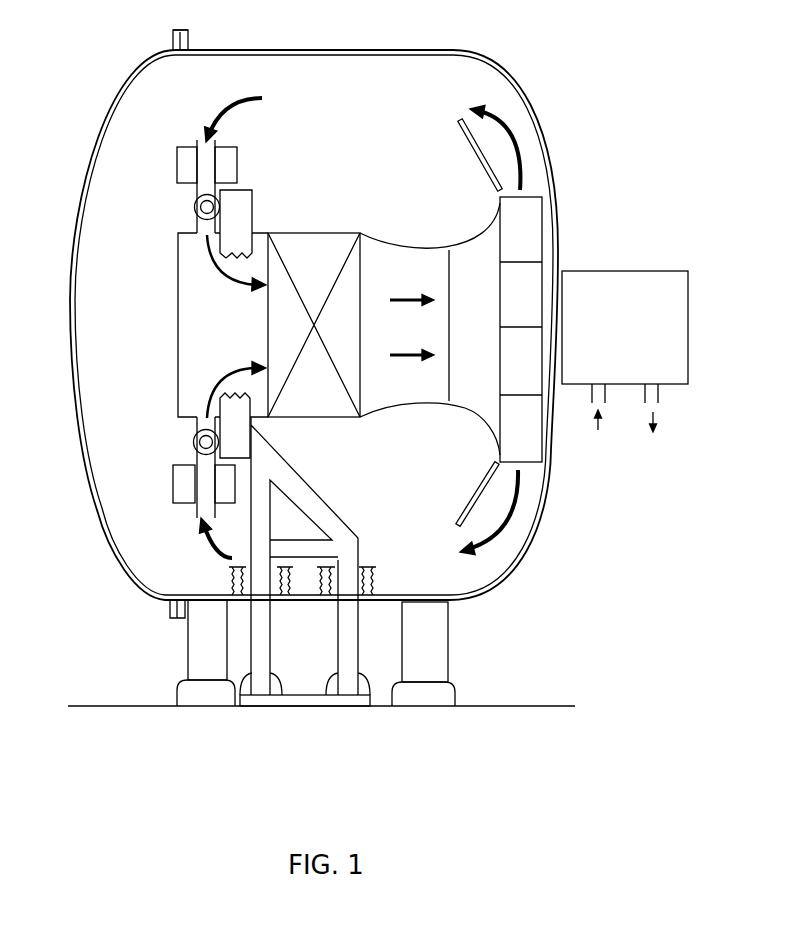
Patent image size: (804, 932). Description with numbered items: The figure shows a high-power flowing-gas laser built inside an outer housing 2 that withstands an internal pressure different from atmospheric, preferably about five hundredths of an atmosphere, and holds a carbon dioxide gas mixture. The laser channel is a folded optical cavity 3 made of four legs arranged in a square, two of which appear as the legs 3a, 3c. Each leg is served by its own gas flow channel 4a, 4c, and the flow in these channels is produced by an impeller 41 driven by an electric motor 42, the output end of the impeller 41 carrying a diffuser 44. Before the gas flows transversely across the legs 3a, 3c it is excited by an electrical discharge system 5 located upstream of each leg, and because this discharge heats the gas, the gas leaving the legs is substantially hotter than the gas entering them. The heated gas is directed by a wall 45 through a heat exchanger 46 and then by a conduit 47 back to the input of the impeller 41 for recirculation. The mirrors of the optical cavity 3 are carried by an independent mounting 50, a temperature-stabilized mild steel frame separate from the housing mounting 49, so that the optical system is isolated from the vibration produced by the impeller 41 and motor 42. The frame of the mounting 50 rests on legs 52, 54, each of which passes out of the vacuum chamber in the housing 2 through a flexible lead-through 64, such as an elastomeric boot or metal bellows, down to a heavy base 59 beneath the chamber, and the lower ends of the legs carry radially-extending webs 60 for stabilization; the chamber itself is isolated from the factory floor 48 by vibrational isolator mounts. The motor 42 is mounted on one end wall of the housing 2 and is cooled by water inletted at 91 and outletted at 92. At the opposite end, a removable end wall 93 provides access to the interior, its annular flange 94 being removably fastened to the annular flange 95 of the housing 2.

The outer housing 2 is at (361, 50).
The optical cavity 3 is at (178, 202).
The leg of optical cavity 3a is at (202, 207).
The leg of optical cavity 3c is at (194, 442).
The gas flow channel 4a is at (218, 143).
The gas flow channel 4c is at (188, 515).
The electrical discharge system 5 is at (185, 147).
The impeller 41 is at (508, 223).
The electric motor 42 is at (646, 277).
The diffuser 44 is at (464, 138).
The wall 45 is at (178, 318).
The heat exchanger 46 is at (297, 233).
The conduit 47 is at (387, 248).
The factory floor 48 is at (513, 706).
The housing mounting 49 is at (438, 648).
The independent mounting 50 is at (270, 428).
The leg 52 is at (266, 648).
The leg 54 is at (347, 652).
The heavy base 59 is at (302, 700).
The radially-extending web 60 is at (373, 686).
The flexible lead-through 64 is at (376, 572).
The water inlet 91 is at (592, 393).
The water outlet 92 is at (660, 393).
The end wall 93 is at (72, 220).
The annular flange 94 is at (171, 43).
The annular flange 95 is at (192, 40).